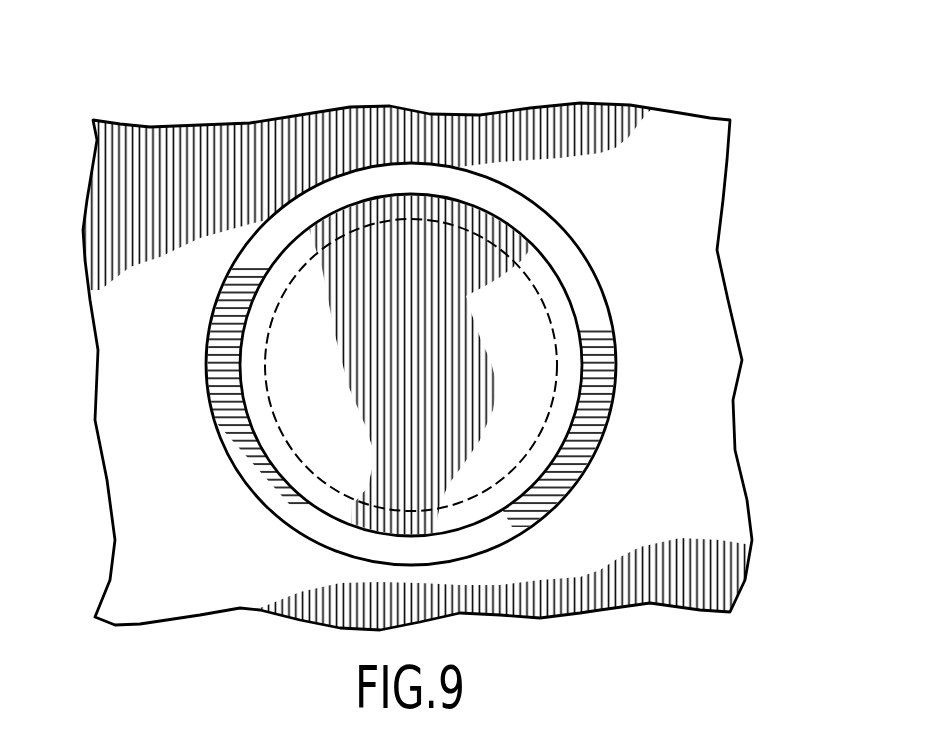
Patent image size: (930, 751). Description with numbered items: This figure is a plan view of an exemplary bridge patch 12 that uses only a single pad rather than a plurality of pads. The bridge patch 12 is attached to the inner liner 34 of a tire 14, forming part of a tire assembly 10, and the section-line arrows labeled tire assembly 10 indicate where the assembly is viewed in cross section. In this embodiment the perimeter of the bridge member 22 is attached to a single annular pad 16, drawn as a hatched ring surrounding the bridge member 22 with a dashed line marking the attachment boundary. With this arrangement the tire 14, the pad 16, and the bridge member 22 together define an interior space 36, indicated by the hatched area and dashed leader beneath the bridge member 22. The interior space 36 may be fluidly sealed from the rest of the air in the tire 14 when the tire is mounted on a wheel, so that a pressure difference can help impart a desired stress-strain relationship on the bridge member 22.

The tire assembly 10 is at (90, 363).
The bridge patch 12 is at (410, 357).
The tire 14 is at (650, 578).
The pad 16 is at (570, 463).
The bridge member 22 is at (411, 279).
The inner liner 34 is at (679, 222).
The interior space 36 is at (418, 268).